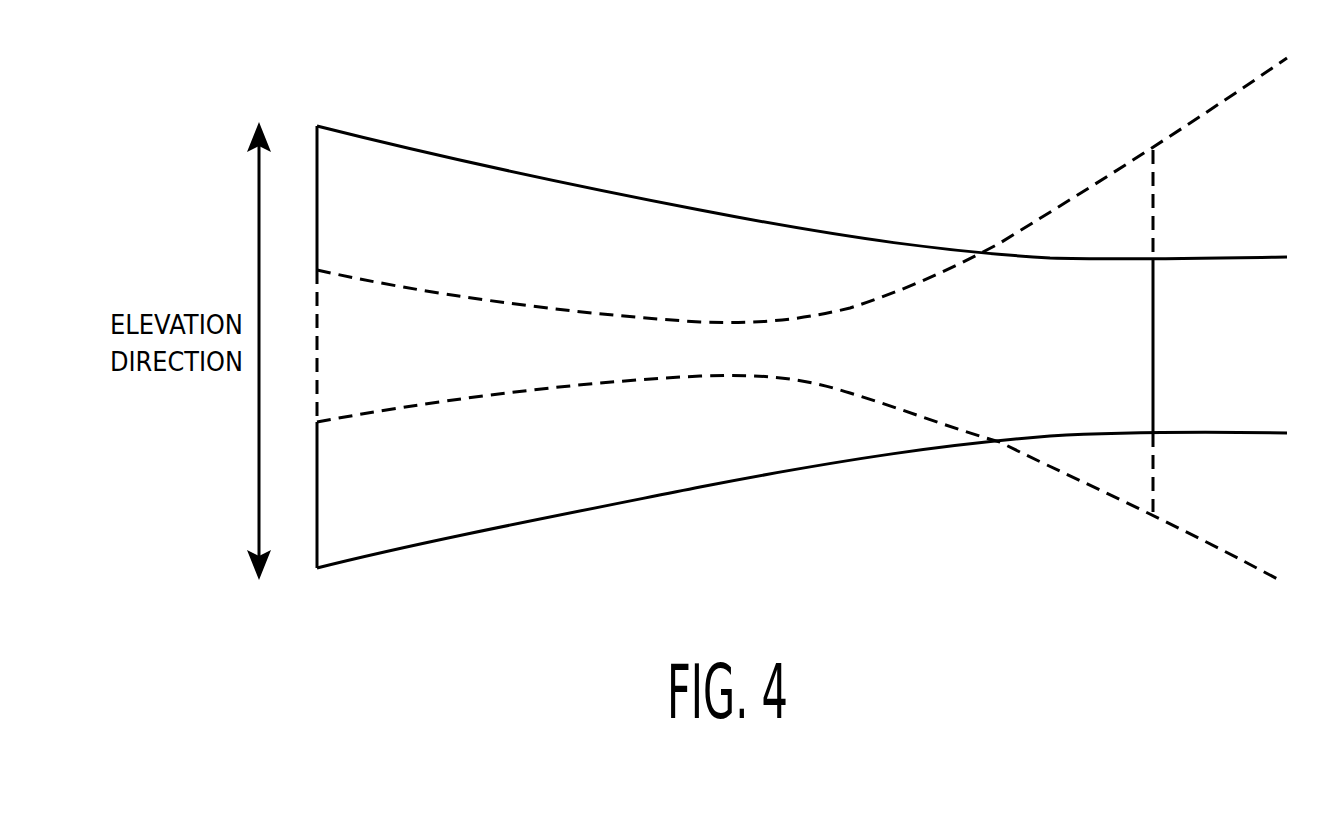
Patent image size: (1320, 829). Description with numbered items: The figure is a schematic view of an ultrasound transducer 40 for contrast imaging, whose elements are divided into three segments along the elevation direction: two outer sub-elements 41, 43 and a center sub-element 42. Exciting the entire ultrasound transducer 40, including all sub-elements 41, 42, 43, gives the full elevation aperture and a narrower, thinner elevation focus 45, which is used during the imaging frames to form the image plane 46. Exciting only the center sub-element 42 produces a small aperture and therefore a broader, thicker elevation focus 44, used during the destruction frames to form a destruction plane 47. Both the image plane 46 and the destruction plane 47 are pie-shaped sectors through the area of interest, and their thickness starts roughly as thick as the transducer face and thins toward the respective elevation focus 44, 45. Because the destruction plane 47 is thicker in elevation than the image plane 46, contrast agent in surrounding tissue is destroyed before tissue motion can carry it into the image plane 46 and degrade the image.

The ultrasound transducer 40 is at (312, 152).
The sub-element 41 is at (318, 218).
The center sub-element 42 is at (318, 352).
The sub-element 43 is at (318, 501).
The elevation focus 44 is at (1072, 192).
The elevation focus 45 is at (1082, 440).
The image plane 46 is at (1162, 350).
The destruction plane 47 is at (1162, 212).